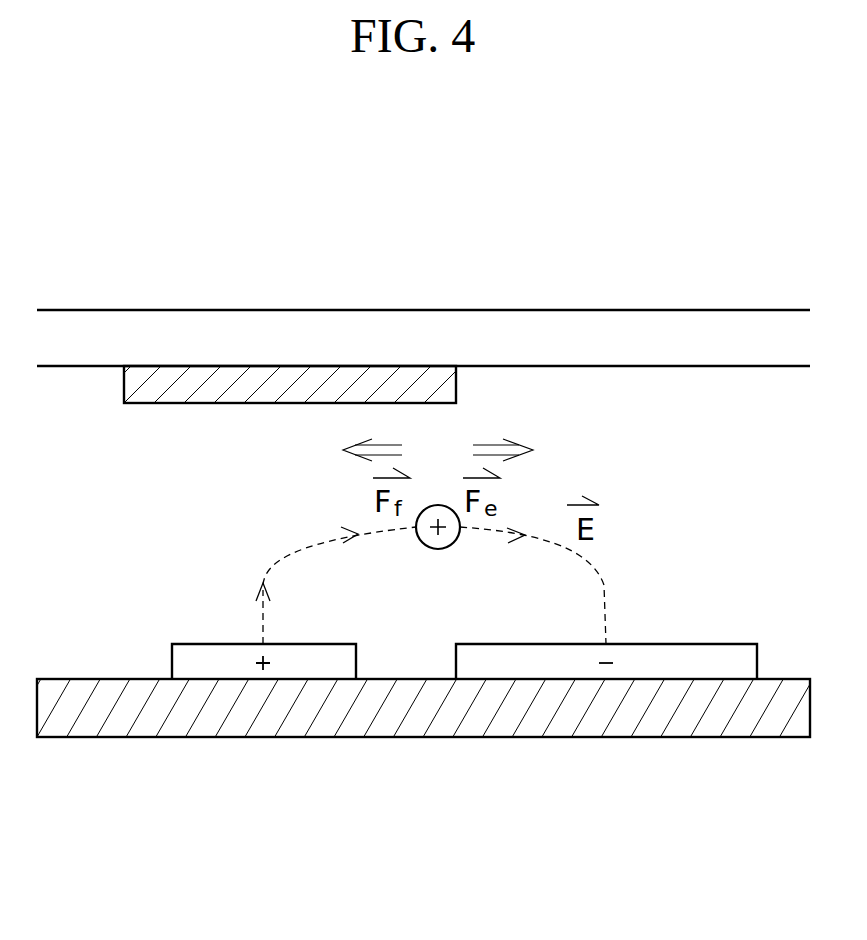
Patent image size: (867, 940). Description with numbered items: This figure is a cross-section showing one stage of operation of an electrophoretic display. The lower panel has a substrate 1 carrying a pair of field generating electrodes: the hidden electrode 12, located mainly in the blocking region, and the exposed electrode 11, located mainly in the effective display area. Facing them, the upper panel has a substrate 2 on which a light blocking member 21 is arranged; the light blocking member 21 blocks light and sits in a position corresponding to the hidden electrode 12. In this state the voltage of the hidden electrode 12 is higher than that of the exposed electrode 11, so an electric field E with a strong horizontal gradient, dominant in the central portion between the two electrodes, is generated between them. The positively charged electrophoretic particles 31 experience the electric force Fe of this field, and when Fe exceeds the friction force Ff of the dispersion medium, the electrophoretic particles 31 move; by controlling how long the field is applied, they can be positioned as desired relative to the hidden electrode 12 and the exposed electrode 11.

The substrate 1 is at (380, 719).
The exposed electrode 11 is at (573, 664).
The hidden electrode 12 is at (182, 664).
The substrate 2 is at (605, 330).
The light blocking member 21 is at (297, 383).
The electrophoretic particles 31 is at (438, 505).